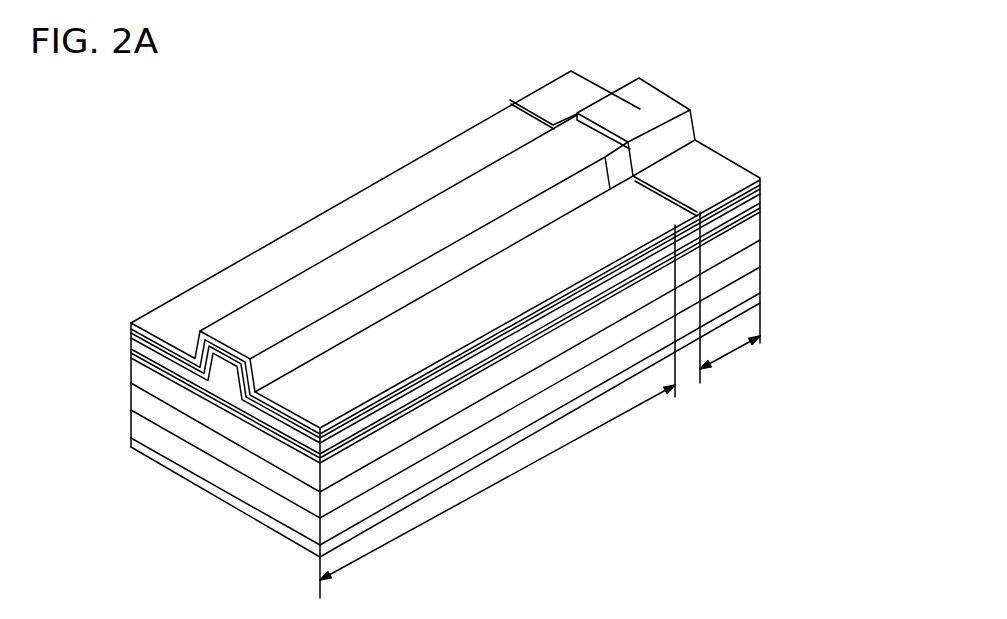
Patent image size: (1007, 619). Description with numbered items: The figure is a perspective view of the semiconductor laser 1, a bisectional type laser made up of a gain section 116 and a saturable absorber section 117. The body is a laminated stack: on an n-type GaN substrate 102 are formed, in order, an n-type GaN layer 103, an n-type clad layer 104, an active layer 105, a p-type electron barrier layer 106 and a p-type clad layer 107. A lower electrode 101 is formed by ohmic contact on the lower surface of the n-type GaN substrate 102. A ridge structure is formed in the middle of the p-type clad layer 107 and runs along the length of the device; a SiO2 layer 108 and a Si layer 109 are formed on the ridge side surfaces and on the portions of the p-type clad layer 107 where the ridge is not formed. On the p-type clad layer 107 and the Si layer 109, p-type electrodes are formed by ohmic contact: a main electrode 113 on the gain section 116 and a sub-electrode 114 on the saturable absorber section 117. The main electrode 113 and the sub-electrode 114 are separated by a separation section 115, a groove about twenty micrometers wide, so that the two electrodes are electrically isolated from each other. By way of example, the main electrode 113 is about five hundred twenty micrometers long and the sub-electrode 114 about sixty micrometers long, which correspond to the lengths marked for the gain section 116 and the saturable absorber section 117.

The semiconductor laser 1 is at (274, 111).
The lower electrode 101 is at (131, 443).
The n-type GaN substrate 102 is at (131, 427).
The n-type GaN layer 103 is at (131, 398).
The n-type clad layer 104 is at (131, 372).
The active layer 105 is at (131, 357).
The p-type electron barrier layer 106 is at (131, 350).
The p-type clad layer 107 is at (131, 338).
The SiO2 layer 108 is at (131, 331).
The Si layer 109 is at (131, 325).
The main electrode 113 is at (263, 261).
The sub-electrode 114 is at (578, 92).
The separation section 115 is at (505, 118).
The gain section 116 is at (497, 402).
The saturable absorber section 117 is at (730, 299).